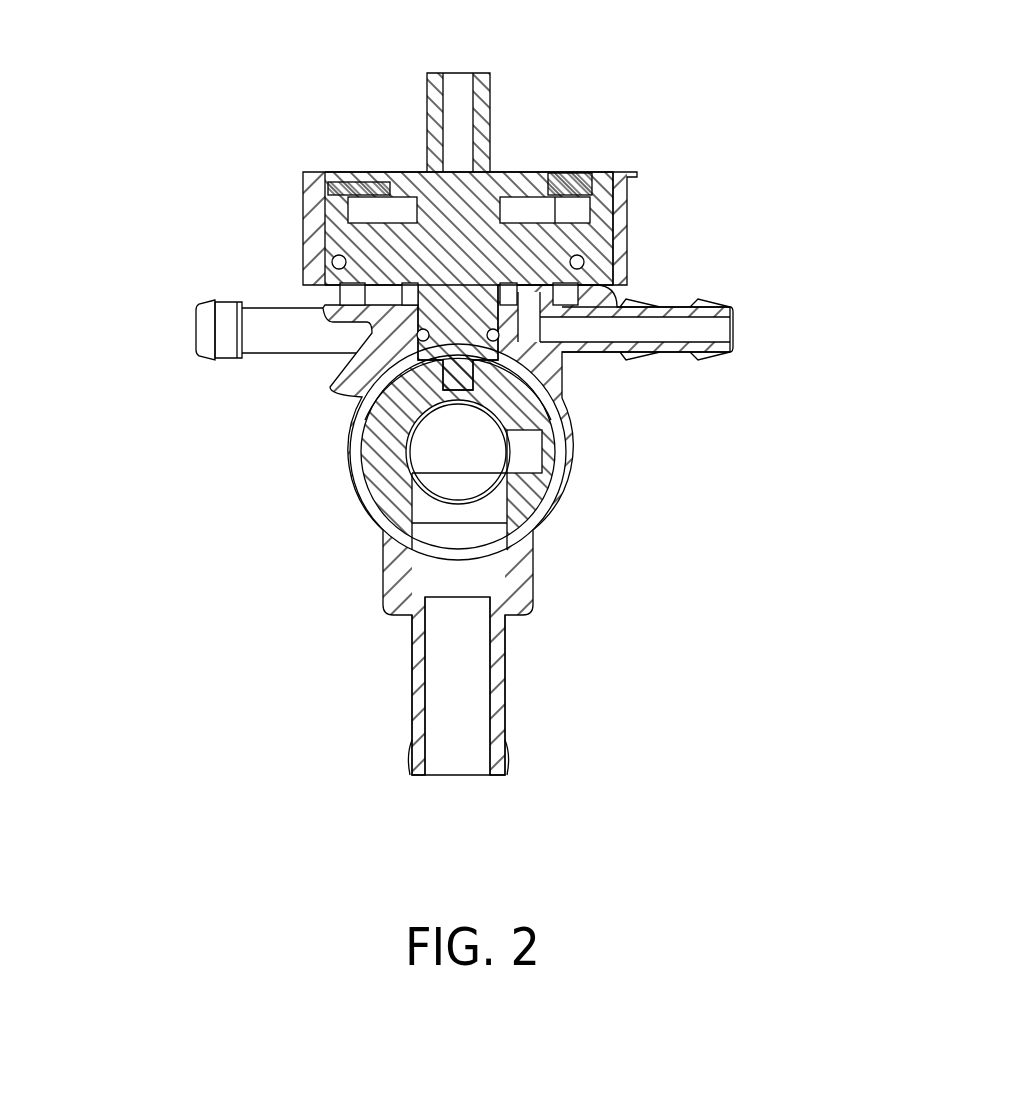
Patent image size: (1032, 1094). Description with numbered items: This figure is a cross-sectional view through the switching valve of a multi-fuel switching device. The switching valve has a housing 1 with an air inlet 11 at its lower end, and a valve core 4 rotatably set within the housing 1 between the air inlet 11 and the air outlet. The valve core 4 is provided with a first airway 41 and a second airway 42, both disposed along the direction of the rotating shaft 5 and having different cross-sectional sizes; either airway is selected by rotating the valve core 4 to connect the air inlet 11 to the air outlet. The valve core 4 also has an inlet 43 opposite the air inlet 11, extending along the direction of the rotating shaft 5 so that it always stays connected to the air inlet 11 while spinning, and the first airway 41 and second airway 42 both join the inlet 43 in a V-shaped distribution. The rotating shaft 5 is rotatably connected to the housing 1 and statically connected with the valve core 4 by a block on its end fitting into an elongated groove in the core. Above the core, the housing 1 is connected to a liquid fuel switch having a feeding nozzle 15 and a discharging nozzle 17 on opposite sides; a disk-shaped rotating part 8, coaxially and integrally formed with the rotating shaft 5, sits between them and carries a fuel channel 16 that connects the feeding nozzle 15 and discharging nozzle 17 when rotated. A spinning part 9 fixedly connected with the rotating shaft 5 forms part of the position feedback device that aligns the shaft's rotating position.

The housing 1 is at (570, 430).
The valve core 4 is at (459, 532).
The first airway 41 is at (520, 455).
The second airway 42 is at (472, 458).
The inlet 43 is at (437, 520).
The rotating shaft 5 is at (440, 318).
The rotating part 8 is at (396, 243).
The spinning part 9 is at (378, 190).
The air inlet 11 is at (470, 718).
The feeding nozzle 15 is at (275, 328).
The fuel channel 16 is at (533, 262).
The discharging nozzle 17 is at (647, 337).